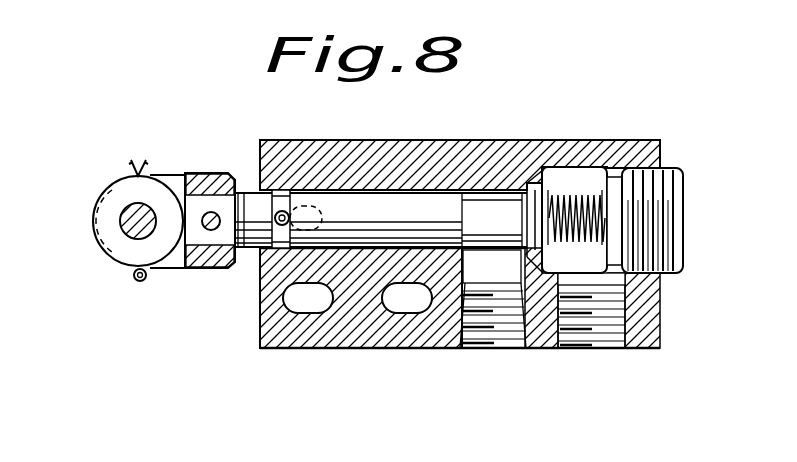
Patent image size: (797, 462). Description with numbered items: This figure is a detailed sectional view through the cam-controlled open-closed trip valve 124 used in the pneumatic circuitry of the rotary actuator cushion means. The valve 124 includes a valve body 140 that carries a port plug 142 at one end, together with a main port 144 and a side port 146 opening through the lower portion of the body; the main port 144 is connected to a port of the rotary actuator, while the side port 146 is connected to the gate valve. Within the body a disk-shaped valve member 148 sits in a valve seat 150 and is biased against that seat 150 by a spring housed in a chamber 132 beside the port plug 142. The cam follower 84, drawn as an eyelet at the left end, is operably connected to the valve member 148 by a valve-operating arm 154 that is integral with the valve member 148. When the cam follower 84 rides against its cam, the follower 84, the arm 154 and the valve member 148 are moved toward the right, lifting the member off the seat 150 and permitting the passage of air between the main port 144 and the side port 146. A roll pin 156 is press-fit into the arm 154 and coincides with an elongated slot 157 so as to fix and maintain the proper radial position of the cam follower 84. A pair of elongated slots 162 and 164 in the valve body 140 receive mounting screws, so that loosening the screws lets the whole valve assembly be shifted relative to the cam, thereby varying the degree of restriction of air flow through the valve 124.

The cam follower 84 is at (100, 248).
The valve 124 is at (393, 140).
The spring chamber 132 is at (580, 205).
The valve body 140 is at (407, 337).
The port plug 142 is at (683, 185).
The main port 144 is at (605, 337).
The side port 146 is at (508, 340).
The valve member 148 is at (537, 187).
The valve seat 150 is at (527, 232).
The valve-operating arm 154 is at (263, 202).
The roll pin 156 is at (262, 247).
The elongated slot 157 is at (303, 207).
The elongated slot 162 is at (288, 297).
The elongated slot 164 is at (392, 302).